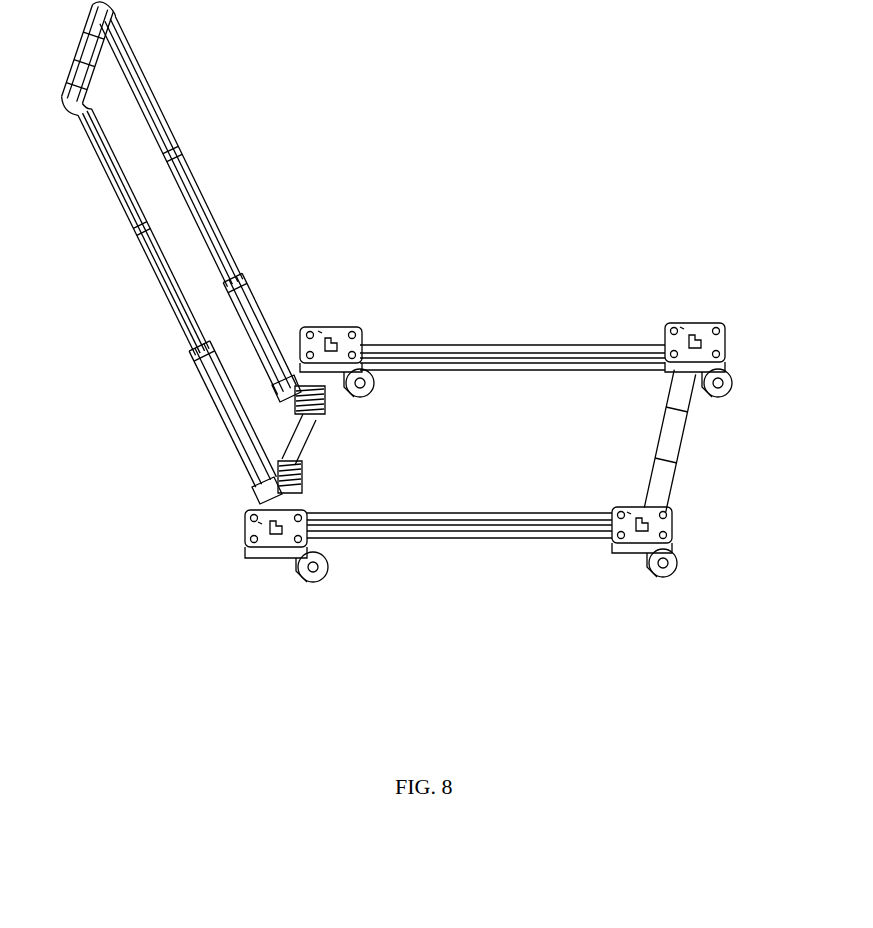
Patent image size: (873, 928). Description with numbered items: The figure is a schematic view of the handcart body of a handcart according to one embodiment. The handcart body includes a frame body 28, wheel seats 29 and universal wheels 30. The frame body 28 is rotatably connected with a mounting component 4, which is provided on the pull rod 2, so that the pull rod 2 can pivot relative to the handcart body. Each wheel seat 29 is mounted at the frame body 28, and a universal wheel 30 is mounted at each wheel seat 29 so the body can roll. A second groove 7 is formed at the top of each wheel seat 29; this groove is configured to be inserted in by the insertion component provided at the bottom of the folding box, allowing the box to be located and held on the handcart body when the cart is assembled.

The pull rod 2 is at (192, 346).
The mounting component 4 is at (327, 408).
The second groove 7 is at (347, 327).
The frame body 28 is at (461, 350).
The wheel seat 29 is at (320, 330).
The universal wheel 30 is at (385, 378).